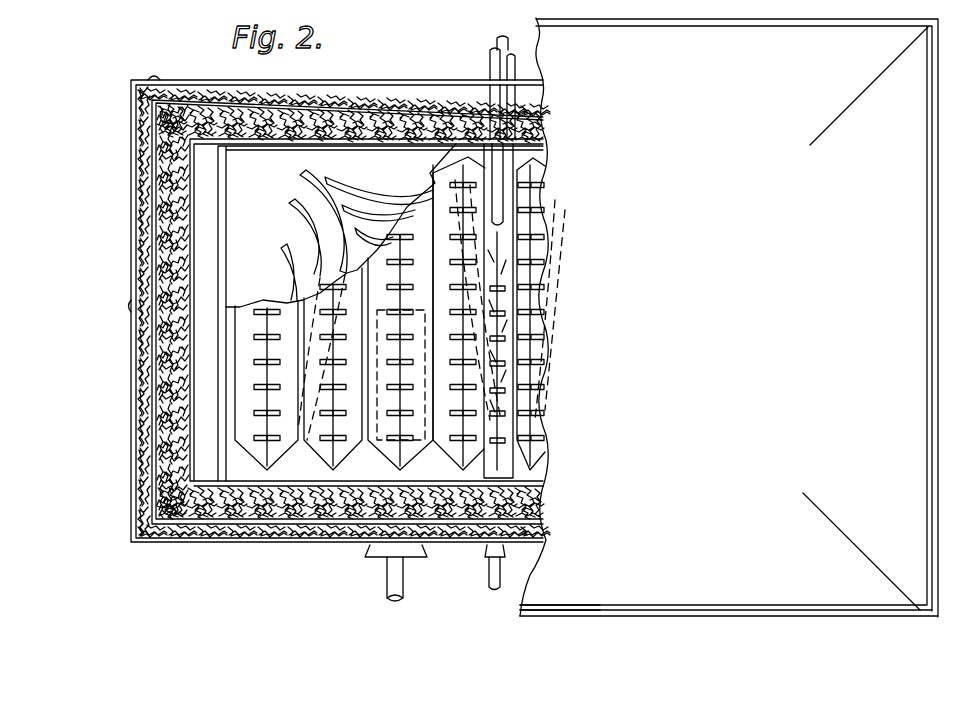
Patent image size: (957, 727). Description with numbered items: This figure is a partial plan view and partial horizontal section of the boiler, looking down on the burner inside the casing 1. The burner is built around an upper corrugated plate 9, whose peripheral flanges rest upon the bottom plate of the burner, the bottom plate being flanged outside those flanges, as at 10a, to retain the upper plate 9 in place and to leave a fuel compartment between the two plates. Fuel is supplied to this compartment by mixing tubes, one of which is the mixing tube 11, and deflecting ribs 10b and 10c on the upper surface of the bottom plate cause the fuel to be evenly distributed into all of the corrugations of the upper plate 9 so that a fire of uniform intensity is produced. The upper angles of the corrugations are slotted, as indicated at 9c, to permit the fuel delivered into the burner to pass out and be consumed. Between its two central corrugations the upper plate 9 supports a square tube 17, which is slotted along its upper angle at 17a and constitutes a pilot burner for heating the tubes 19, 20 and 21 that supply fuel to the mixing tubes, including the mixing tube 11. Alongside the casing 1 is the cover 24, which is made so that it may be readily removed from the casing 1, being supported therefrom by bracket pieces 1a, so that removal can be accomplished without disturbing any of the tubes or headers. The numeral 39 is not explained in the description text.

The casing 1 is at (137, 237).
The bracket pieces 1a is at (548, 613).
The outer insulation layer 39 is at (162, 337).
The flange of bottom plate 10a is at (220, 424).
The upper corrugated plate 9 is at (272, 452).
The slots in corrugations 9c is at (253, 413).
The deflecting rib 10b is at (278, 249).
The deflecting rib 10c is at (373, 190).
The square tube 17 is at (488, 463).
The slot of square tube 17a is at (502, 392).
The fuel supply tube 19 is at (490, 64).
The fuel supply tube 20 is at (516, 72).
The fuel supply tube 21 is at (497, 42).
The mixing tube 11 is at (372, 548).
The cover 24 is at (628, 578).